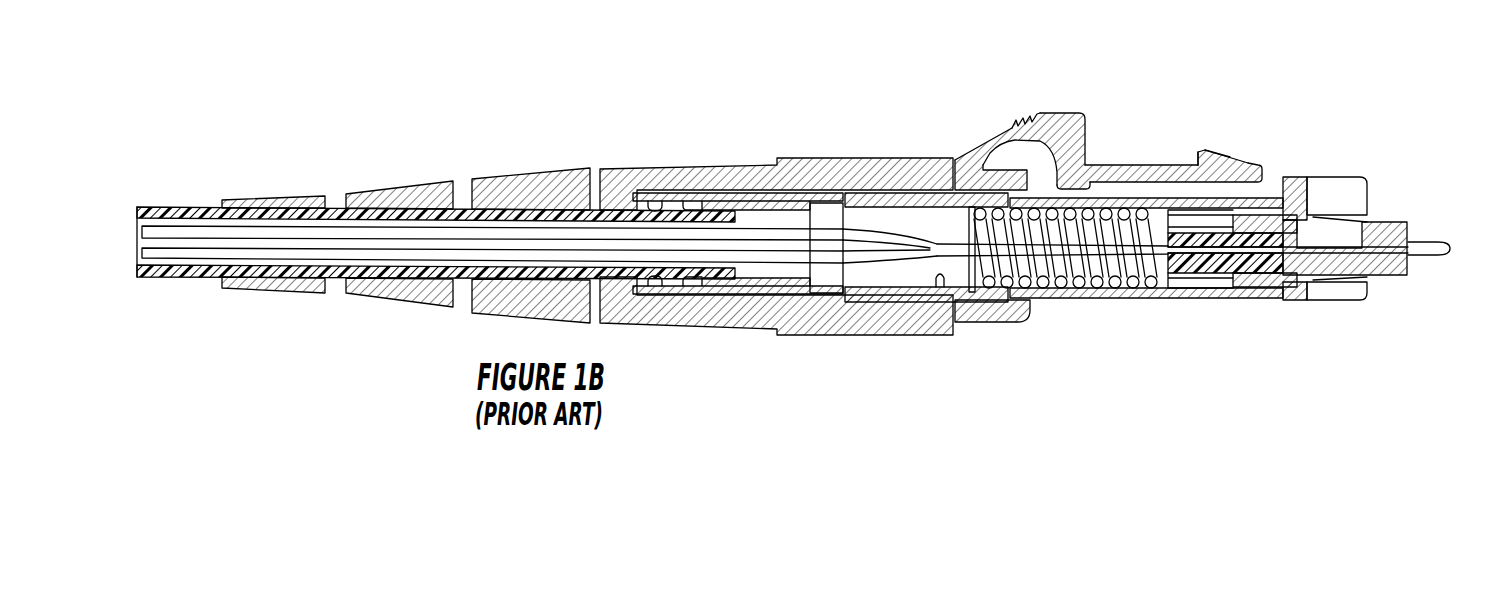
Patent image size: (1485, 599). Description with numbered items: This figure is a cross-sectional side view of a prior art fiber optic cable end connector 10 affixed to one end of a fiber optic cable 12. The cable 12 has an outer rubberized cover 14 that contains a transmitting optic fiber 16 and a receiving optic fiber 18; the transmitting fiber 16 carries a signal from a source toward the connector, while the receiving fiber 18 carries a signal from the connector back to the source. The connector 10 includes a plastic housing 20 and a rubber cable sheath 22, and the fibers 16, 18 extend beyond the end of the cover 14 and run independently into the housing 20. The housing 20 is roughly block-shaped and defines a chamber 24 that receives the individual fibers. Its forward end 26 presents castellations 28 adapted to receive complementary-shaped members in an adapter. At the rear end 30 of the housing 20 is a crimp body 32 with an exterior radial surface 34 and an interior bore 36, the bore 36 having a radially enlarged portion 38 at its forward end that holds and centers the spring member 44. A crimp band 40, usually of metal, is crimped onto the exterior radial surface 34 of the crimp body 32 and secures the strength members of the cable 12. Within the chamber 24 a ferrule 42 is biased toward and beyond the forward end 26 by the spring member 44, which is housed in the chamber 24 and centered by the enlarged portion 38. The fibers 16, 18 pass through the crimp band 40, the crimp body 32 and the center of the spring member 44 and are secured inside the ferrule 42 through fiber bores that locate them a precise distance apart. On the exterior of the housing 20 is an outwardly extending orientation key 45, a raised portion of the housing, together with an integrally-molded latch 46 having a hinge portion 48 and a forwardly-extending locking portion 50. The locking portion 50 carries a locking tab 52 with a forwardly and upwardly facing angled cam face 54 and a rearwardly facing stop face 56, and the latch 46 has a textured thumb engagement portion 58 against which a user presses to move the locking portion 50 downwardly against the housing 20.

The fiber optic cable end connector 10 is at (937, 88).
The fiber optic cable 12 is at (191, 198).
The outer rubberized cover 14 is at (180, 279).
The transmitting optic fiber 16 is at (264, 227).
The receiving optic fiber 18 is at (268, 257).
The plastic housing 20 is at (1040, 304).
The rubber cable sheath 22 is at (842, 157).
The chamber 24 is at (1191, 276).
The forward end 26 is at (1373, 217).
The castellations 28 is at (1343, 196).
The rear end 30 is at (958, 153).
The crimp body 32 is at (962, 301).
The exterior radial surface 34 is at (865, 298).
The interior bore 36 is at (938, 282).
The radially enlarged portion 38 is at (1007, 303).
The crimp band 40 is at (803, 294).
The ferrule 42 is at (1387, 278).
The spring member 44 is at (1130, 288).
The orientation key 45 is at (1300, 179).
The latch 46 is at (1103, 126).
The hinge portion 48 is at (967, 153).
The locking portion 50 is at (1141, 163).
The locking tab 52 is at (1223, 159).
The angled cam face 54 is at (1245, 158).
The stop face 56 is at (1191, 162).
The textured thumb engagement portion 58 is at (1025, 113).